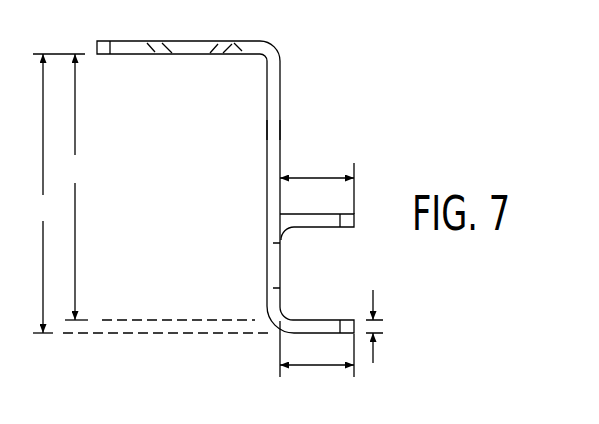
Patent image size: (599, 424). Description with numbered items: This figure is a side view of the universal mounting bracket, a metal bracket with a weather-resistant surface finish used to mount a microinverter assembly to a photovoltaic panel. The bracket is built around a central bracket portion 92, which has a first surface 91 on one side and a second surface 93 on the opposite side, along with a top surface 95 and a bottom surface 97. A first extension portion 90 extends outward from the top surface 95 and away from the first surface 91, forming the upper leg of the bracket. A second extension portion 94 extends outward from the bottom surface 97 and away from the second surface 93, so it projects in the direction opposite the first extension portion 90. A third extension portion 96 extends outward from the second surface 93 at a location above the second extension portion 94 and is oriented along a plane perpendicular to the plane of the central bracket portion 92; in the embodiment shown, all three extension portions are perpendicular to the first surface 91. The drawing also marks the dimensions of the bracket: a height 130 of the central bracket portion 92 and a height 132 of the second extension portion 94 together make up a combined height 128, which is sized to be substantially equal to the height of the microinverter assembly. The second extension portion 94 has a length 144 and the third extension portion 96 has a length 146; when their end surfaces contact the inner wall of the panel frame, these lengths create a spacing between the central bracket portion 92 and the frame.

The first extension portion 90 is at (127, 41).
The first surface 91 is at (266, 128).
The central bracket portion 92 is at (282, 90).
The second surface 93 is at (284, 128).
The second extension portion 94 is at (318, 320).
The top surface 95 is at (286, 33).
The third extension portion 96 is at (302, 213).
The bottom surface 97 is at (272, 342).
The combined height 128 is at (148, 193).
The height of the central bracket portion 130 is at (156, 187).
The height of the second extension portion 132 is at (374, 296).
The length of the second extension portion 144 is at (318, 366).
The length of the third extension portion 146 is at (318, 177).